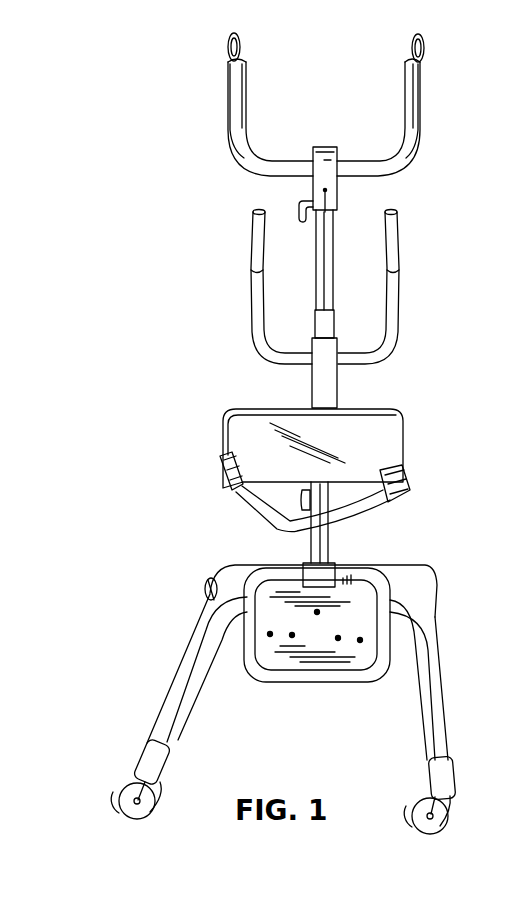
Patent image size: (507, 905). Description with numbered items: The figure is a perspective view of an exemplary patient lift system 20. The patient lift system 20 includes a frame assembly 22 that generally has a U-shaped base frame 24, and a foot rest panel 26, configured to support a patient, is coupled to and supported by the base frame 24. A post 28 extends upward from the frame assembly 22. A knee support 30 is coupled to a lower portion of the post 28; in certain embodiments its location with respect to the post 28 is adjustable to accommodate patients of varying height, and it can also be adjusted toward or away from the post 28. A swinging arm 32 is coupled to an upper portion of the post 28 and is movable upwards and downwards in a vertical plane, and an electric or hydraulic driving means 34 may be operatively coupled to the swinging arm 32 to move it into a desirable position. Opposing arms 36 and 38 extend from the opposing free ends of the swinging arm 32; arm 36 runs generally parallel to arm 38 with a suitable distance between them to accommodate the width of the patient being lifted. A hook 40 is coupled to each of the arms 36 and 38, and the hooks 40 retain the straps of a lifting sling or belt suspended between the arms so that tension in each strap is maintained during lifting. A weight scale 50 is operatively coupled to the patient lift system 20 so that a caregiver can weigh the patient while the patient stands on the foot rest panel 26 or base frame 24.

The patient lift system 20 is at (88, 271).
The frame assembly 22 is at (166, 667).
The U-shaped base frame 24 is at (185, 717).
The foot rest panel 26 is at (286, 678).
The post 28 is at (329, 543).
The knee support 30 is at (394, 420).
The swinging arm 32 is at (258, 166).
The driving means 34 is at (317, 270).
The arm 36 is at (248, 88).
The arm 38 is at (404, 106).
The hook 40 is at (241, 43).
The weight scale 50 is at (184, 607).